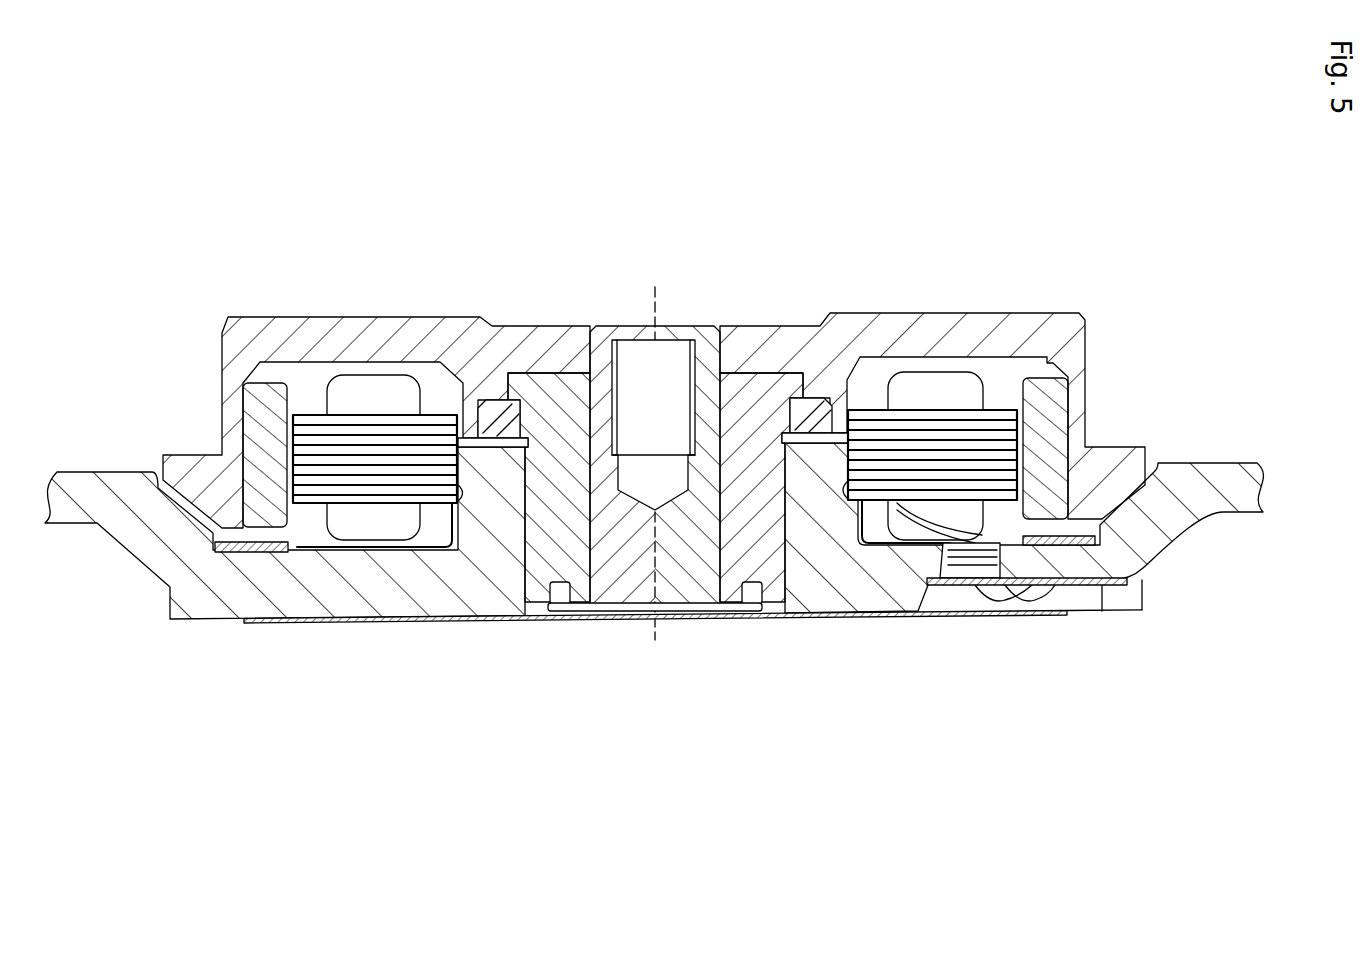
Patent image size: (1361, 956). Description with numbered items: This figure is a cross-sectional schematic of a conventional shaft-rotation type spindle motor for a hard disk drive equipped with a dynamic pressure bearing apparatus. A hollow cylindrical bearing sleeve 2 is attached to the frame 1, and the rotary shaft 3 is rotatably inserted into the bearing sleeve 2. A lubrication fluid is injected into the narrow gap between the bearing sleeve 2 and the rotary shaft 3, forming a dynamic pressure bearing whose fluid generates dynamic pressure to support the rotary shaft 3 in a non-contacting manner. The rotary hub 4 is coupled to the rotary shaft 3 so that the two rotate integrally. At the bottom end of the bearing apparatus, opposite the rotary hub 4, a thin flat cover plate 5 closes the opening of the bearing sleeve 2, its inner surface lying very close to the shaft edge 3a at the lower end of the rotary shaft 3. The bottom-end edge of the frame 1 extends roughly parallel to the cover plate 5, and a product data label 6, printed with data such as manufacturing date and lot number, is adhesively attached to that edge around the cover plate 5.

The frame 1 is at (327, 620).
The bearing sleeve 2 is at (744, 498).
The rotary shaft 3 is at (707, 322).
The shaft edge 3a is at (620, 620).
The rotary hub 4 is at (893, 313).
The cover plate 5 is at (677, 618).
The product data label 6 is at (527, 622).